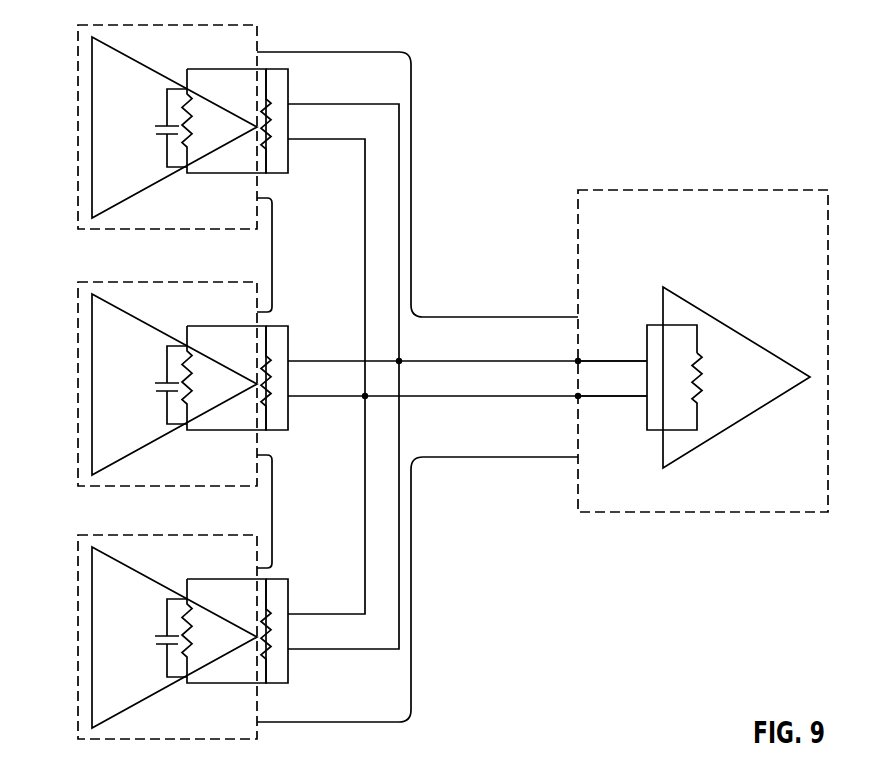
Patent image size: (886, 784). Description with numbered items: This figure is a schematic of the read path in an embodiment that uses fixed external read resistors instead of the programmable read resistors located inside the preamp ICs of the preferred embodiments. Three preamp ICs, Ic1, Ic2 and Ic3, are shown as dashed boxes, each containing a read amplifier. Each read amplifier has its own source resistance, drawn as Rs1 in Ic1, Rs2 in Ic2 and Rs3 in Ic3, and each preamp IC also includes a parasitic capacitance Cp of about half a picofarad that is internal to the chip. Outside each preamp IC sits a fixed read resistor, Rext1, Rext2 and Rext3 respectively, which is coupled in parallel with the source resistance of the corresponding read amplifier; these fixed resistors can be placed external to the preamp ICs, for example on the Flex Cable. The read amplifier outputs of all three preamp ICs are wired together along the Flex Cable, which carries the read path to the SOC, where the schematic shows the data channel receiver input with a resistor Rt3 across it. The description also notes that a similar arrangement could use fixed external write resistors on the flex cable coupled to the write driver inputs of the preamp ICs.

The preamp IC Ic1 is at (78, 61).
The preamp IC Ic2 is at (78, 318).
The preamp IC Ic3 is at (78, 571).
The source resistance Rs1 is at (224, 121).
The source resistance Rs2 is at (224, 378).
The source resistance Rs3 is at (224, 631).
The fixed read resistor Rext1 is at (296, 121).
The fixed read resistor Rext2 is at (296, 378).
The fixed read resistor Rext3 is at (296, 631).
The parasitic capacitance Cp is at (162, 387).
The flex cable Flex Cable is at (422, 315).
The system on chip SOC is at (598, 190).
The termination resistor of data channel receiver input Rt3 is at (695, 377).